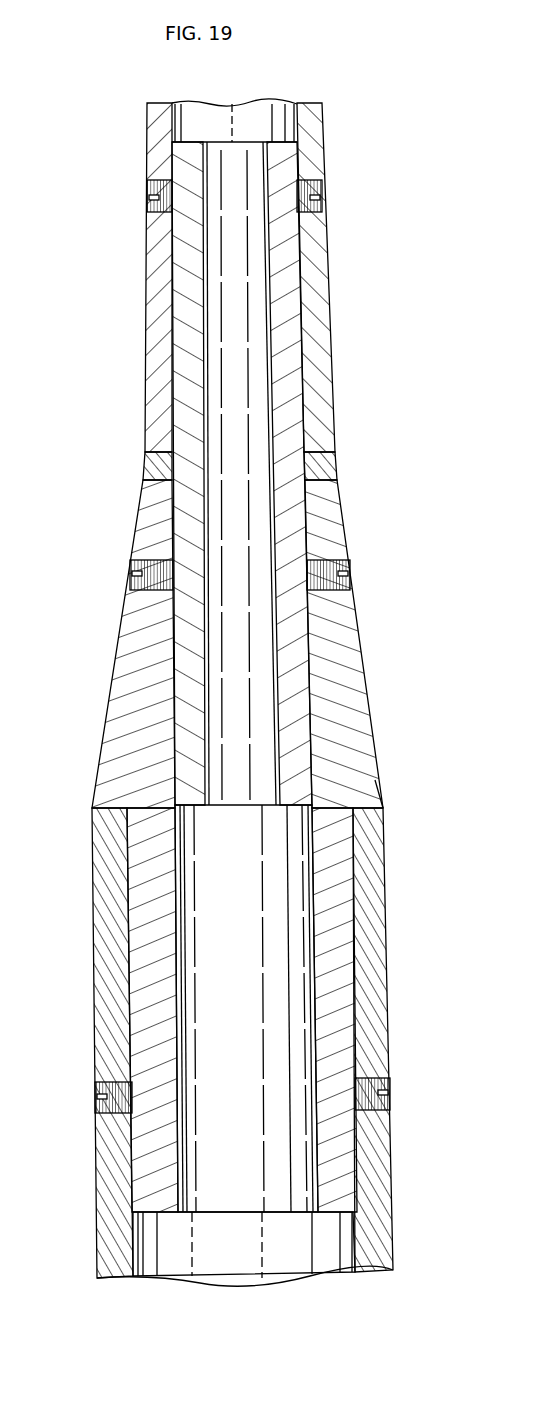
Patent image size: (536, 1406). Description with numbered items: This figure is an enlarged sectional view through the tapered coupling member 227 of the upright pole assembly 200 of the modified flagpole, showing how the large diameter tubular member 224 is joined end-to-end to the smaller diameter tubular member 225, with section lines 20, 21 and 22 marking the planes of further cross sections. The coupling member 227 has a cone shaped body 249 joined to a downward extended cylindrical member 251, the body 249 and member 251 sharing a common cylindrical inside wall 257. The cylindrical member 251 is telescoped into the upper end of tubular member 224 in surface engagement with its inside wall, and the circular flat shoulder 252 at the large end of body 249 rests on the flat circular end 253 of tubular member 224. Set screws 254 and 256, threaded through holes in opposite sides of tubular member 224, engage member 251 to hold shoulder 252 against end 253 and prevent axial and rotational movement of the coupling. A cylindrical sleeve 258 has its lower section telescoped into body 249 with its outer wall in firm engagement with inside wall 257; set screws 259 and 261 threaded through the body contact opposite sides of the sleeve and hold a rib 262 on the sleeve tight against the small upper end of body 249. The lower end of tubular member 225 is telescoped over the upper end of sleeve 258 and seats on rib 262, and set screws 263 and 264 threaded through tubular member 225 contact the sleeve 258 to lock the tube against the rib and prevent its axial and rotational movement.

The section line 20- 20 is at (82, 808).
The section line 21- 21 is at (135, 452).
The section line 22- 22 is at (143, 118).
The upright pole assembly 200 is at (410, 285).
The tubular member 224 is at (372, 1243).
The tubular member 225 is at (317, 309).
The tapered coupling member 227 is at (375, 658).
The cone shaped body 249 is at (357, 707).
The cylindrical member 251 is at (342, 943).
The circular flat shoulder 252 is at (378, 795).
The flat circular end 253 is at (372, 826).
The set screw 254 is at (388, 1082).
The set screw 256 is at (97, 1108).
The cylindrical inside wall 257 is at (178, 935).
The cylindrical sleeve 258 is at (187, 658).
The set screw 259 is at (340, 572).
The set screw 261 is at (135, 563).
The rib 262 is at (312, 470).
The set screw 263 is at (323, 206).
The set screw 264 is at (148, 205).